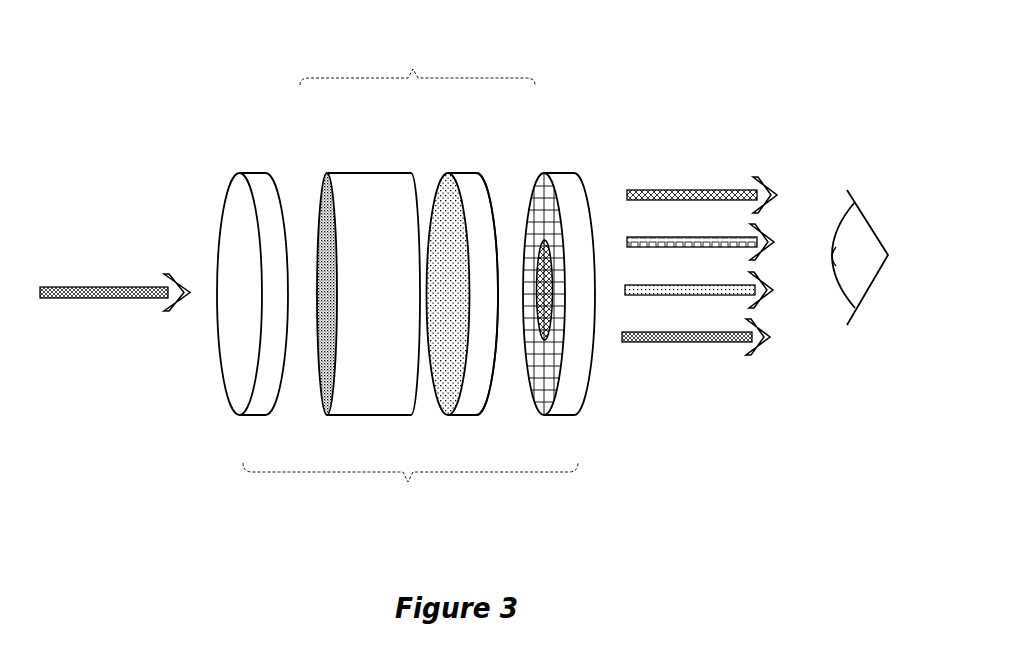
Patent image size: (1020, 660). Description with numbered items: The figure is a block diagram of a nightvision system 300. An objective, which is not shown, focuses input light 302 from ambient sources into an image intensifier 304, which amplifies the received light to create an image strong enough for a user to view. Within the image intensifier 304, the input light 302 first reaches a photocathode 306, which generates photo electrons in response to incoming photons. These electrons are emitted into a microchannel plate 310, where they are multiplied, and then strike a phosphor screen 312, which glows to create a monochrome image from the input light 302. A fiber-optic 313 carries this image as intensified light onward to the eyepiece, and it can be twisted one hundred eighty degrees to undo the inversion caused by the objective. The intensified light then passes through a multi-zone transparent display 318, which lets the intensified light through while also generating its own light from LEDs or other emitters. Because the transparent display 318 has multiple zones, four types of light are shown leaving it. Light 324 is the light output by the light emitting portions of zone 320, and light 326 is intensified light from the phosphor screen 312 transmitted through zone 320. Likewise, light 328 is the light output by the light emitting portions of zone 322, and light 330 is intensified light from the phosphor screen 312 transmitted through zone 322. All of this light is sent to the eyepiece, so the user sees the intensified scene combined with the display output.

The nightvision system 300 is at (428, 533).
The input light 302 is at (93, 289).
The image intensifier 304 is at (427, 52).
The photocathode 306 is at (263, 173).
The microchannel plate 310 is at (389, 304).
The phosphor screen 312 is at (452, 173).
The fiber-optic 313 is at (469, 192).
The transparent display 318 is at (580, 280).
The zone 320 is at (548, 390).
The zone 322 is at (547, 295).
The light 324 is at (650, 237).
The light 326 is at (650, 190).
The light 328 is at (645, 332).
The light 330 is at (648, 285).